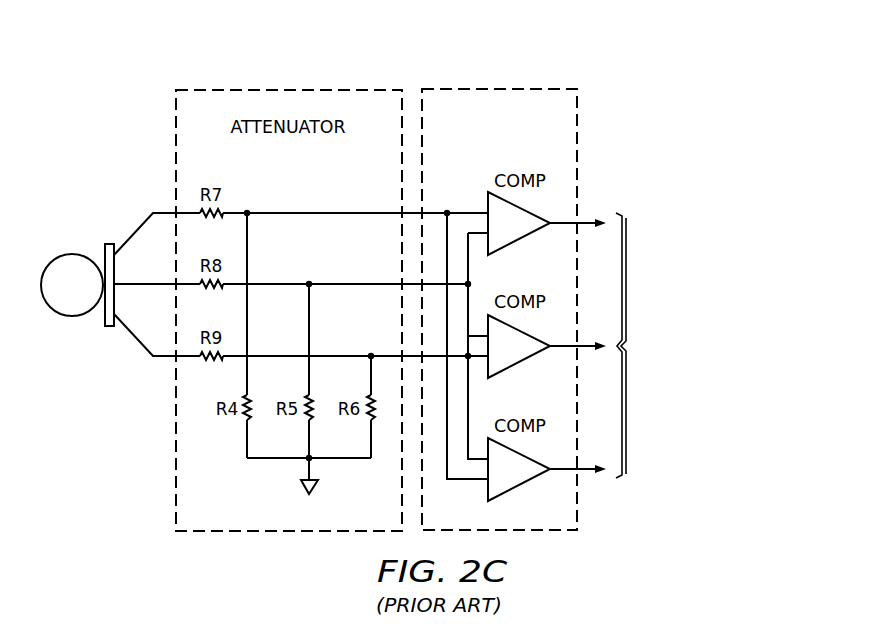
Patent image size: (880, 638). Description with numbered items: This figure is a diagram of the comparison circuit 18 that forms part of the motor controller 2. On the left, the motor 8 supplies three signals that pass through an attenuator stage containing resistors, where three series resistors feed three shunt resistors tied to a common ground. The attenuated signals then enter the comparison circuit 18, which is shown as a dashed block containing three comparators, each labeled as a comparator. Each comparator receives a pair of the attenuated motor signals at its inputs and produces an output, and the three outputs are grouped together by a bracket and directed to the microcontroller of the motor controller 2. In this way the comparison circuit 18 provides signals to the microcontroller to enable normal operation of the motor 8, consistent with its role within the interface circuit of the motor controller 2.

The motor 8 is at (73, 253).
The comparison circuit 18 is at (500, 86).
The motor controller 2 is at (703, 345).